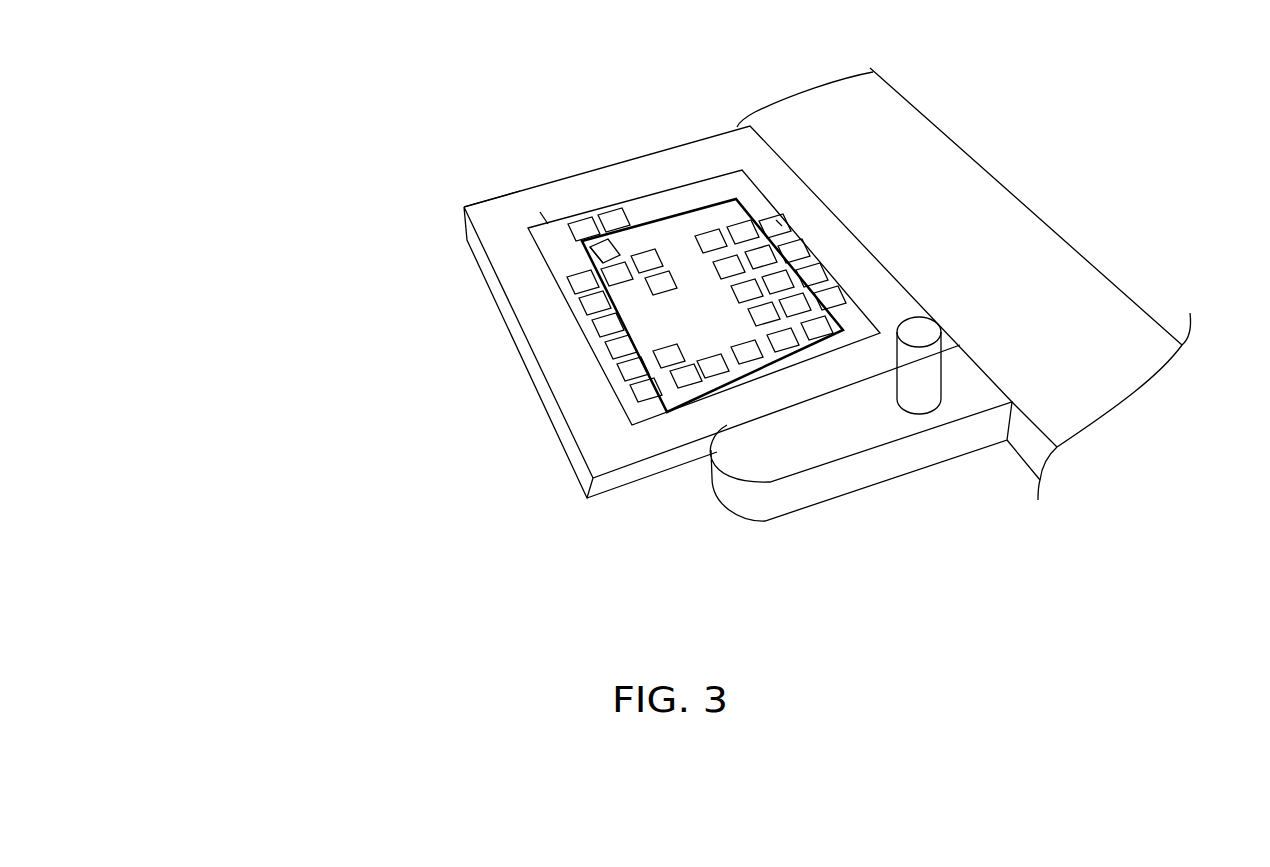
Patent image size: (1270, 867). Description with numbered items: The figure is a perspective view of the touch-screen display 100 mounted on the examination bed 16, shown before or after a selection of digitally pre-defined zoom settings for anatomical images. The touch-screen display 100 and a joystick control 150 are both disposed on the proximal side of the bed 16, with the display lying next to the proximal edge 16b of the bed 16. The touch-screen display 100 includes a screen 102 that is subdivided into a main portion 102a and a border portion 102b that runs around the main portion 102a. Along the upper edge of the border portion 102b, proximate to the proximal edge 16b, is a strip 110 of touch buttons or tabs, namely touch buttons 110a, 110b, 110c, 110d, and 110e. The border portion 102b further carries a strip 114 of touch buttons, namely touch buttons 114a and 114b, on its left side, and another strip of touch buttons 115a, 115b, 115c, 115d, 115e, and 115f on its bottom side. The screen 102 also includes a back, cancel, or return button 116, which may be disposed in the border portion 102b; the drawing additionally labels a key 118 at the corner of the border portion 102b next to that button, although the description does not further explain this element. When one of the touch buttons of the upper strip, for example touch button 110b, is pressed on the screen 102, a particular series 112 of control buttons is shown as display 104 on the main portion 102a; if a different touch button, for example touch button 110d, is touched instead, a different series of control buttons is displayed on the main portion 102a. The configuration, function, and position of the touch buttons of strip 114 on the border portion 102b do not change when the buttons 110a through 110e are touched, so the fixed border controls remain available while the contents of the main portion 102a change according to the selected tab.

The touch-screen display 100 is at (517, 205).
The bed 16 is at (998, 200).
The proximal edge 16b is at (778, 222).
The screen 102 is at (652, 237).
The main portion 102a is at (693, 222).
The border portion 102b is at (492, 216).
The display 104 is at (727, 222).
The strip of touch buttons 110 is at (974, 268).
The touch button 110a is at (777, 230).
The touch button 110b is at (795, 254).
The touch button 110c is at (813, 277).
The touch button 110d is at (831, 300).
The touch button 110e is at (835, 325).
The series of control buttons 112 is at (720, 375).
The strip of touch buttons 114 is at (545, 220).
The touch button 114a is at (585, 228).
The touch button 114b is at (610, 218).
The touch button 115a is at (575, 282).
The touch button 115b is at (588, 302).
The touch button 115c is at (600, 325).
The touch button 115d is at (613, 349).
The touch button 115e is at (627, 377).
The touch button 115f is at (640, 395).
The back, cancel, or return button 116 is at (578, 247).
The key 118 is at (588, 251).
The joystick control 150 is at (943, 367).